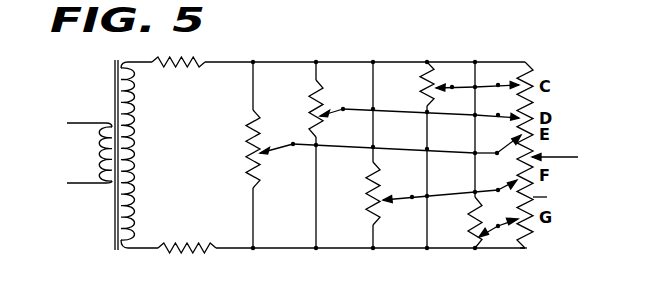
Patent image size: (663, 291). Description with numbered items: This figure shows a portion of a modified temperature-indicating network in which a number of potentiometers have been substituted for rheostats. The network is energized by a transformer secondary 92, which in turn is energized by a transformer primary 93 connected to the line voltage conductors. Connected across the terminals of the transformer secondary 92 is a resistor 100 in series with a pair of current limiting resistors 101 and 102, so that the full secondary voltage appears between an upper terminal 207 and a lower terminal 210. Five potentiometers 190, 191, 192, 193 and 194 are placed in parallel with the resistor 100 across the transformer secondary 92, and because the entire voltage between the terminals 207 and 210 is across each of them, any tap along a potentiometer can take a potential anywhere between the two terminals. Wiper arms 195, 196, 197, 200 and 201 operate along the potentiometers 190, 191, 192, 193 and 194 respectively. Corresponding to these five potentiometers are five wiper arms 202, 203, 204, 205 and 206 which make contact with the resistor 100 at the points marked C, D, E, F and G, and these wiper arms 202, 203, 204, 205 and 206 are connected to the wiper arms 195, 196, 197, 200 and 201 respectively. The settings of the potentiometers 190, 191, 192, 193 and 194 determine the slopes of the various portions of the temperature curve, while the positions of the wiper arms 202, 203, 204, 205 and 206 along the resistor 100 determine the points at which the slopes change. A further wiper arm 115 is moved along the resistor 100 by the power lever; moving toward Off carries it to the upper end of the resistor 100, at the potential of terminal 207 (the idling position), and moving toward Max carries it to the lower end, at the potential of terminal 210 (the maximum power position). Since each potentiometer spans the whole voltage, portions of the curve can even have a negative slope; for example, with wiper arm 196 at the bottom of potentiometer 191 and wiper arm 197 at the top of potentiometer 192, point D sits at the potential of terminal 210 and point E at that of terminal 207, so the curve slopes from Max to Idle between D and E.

The transformer secondary 92 is at (133, 149).
The transformer primary 93 is at (100, 150).
The resistor 100 is at (556, 197).
The current limiting resistor 101 is at (204, 58).
The current limiting resistor 102 is at (164, 250).
The wiper arm 115 is at (578, 157).
The potentiometer 190 is at (421, 92).
The potentiometer 191 is at (311, 111).
The potentiometer 192 is at (250, 132).
The potentiometer 193 is at (366, 207).
The potentiometer 194 is at (468, 228).
The wiper arm 195 is at (440, 86).
The wiper arm 196 is at (323, 113).
The wiper arm 197 is at (280, 155).
The wiper arm 200 is at (393, 198).
The wiper arm 201 is at (490, 228).
The wiper arm 202 is at (505, 82).
The wiper arm 203 is at (513, 114).
The wiper arm 204 is at (506, 152).
The wiper arm 205 is at (505, 186).
The wiper arm 206 is at (515, 236).
The terminal 207 is at (253, 60).
The terminal 210 is at (251, 250).